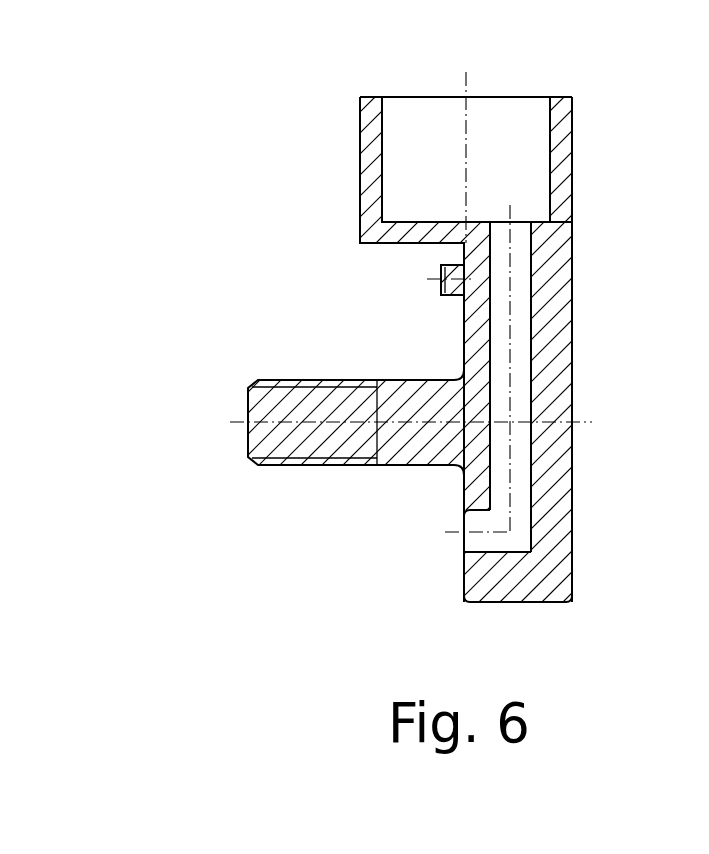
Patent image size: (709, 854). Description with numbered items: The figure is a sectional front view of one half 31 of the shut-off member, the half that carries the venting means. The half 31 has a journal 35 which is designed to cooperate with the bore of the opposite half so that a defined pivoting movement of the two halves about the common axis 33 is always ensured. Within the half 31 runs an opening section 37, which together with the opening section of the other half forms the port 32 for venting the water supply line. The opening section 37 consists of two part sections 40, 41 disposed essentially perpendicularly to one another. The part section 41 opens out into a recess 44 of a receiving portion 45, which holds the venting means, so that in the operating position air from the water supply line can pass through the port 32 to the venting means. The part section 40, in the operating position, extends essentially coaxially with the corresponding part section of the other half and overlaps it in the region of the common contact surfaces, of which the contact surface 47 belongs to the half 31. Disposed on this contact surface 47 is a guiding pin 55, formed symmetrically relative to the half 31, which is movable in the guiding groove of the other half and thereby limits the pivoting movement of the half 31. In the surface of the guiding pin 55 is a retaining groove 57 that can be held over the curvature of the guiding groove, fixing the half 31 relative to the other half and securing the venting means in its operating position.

The half 31 is at (585, 381).
The port 32 is at (445, 520).
The common axis 33 is at (248, 432).
The journal 35 is at (280, 402).
The opening section 37 is at (518, 322).
The part section 40 is at (478, 537).
The part section 41 is at (520, 450).
The recess 44 is at (500, 122).
The receiving portion 45 is at (575, 168).
The contact surface 47 is at (464, 578).
The guiding pin 55 is at (448, 296).
The retaining groove 57 is at (443, 268).